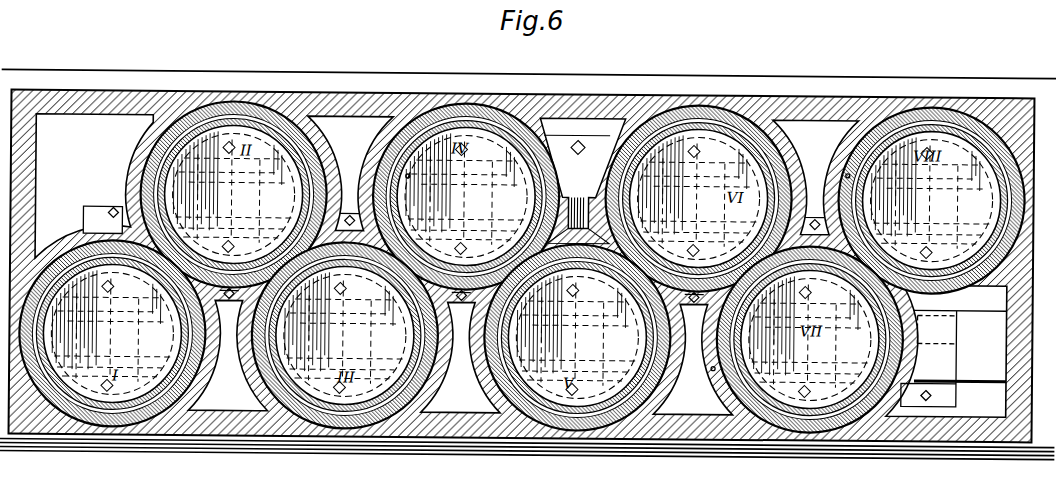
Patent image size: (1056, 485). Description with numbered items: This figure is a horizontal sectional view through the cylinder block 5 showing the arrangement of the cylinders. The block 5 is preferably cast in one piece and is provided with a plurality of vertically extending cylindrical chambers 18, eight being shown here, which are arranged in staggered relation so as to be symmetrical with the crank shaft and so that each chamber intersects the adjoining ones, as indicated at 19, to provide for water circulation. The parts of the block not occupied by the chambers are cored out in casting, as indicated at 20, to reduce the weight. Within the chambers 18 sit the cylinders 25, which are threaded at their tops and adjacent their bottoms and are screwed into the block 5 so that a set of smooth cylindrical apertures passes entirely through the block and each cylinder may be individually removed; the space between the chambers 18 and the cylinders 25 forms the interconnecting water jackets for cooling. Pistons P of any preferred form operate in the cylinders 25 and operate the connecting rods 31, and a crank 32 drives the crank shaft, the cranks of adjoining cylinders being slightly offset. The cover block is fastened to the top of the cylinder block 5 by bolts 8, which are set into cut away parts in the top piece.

The cylindrical chambers 18 is at (146, 415).
The cored out parts 20 is at (700, 393).
The cylinder block 5 is at (593, 118).
The bolts 8 is at (232, 105).
The cylinders 25 is at (1007, 207).
The intersection of adjoining chambers 19 is at (887, 267).
The connecting rods 31 is at (947, 330).
The crank 32 is at (987, 362).
The pistons P is at (714, 367).